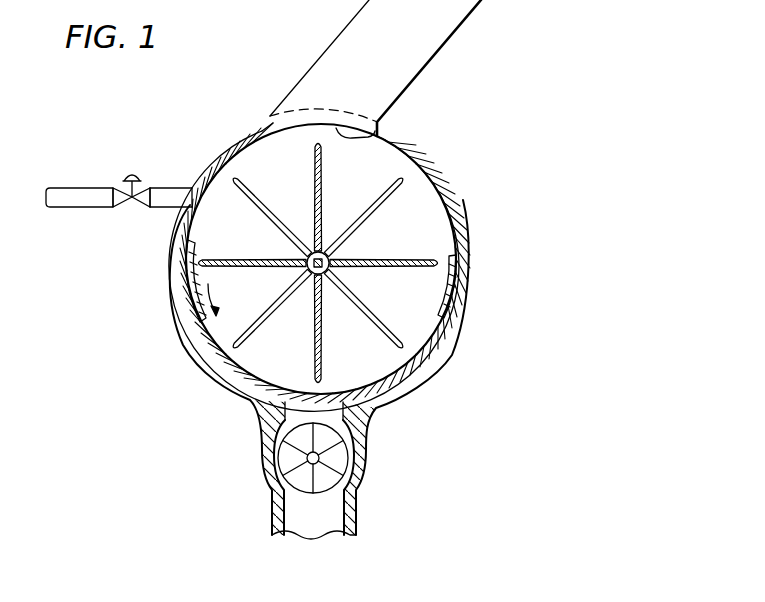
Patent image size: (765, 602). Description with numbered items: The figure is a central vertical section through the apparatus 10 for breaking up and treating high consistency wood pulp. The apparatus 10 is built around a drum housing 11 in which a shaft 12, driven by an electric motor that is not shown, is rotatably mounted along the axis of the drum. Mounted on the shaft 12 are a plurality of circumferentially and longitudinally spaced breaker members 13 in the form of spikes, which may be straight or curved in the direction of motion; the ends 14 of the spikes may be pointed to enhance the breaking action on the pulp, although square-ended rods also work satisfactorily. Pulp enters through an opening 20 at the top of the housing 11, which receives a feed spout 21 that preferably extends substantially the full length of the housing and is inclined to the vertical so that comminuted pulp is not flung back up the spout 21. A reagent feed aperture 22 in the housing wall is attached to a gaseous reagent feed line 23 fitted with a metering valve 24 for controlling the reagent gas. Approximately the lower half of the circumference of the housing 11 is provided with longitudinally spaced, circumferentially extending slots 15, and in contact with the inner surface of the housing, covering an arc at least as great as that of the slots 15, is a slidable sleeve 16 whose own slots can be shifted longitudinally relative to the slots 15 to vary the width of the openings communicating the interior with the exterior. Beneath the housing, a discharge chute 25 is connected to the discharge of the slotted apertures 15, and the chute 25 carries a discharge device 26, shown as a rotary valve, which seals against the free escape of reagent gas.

The apparatus 10 is at (469, 212).
The drum housing 11 is at (467, 295).
The shaft 12 is at (307, 256).
The breaker members 13 is at (315, 162).
The ends of the spikes 14 is at (404, 183).
The slots 15 is at (330, 410).
The slidable sleeve 16 is at (388, 378).
The opening 20 is at (346, 135).
The feed spout 21 is at (352, 28).
The reagent feed aperture 22 is at (207, 192).
The gaseous reagent feed line 23 is at (68, 189).
The metering valve 24 is at (133, 171).
The discharge chute 25 is at (367, 458).
The discharge device 26 is at (280, 461).